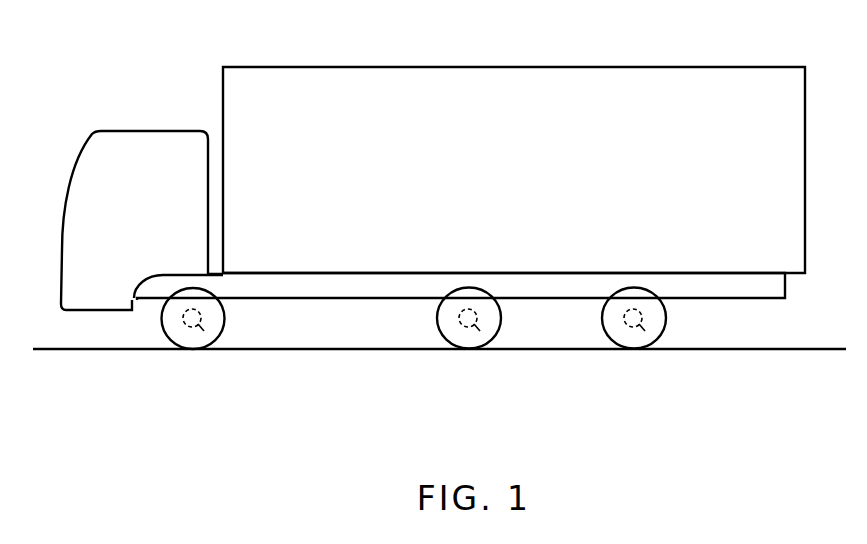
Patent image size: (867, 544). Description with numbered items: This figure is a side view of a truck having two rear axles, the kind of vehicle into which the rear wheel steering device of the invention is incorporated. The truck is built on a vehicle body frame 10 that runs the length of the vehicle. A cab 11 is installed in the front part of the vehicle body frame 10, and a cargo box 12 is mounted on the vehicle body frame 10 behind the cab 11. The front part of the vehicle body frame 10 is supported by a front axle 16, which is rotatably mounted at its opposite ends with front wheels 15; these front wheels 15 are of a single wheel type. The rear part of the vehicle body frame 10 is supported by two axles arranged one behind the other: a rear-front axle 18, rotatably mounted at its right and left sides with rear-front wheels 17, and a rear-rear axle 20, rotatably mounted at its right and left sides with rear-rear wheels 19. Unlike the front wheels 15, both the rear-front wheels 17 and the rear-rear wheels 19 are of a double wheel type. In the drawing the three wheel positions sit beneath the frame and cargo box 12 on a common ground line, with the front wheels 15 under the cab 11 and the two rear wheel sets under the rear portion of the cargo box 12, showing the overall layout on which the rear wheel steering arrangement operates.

The vehicle body frame 10 is at (292, 292).
The cab 11 is at (123, 135).
The cargo box 12 is at (582, 87).
The front wheels 15 is at (165, 338).
The front axle 16 is at (206, 336).
The rear-front wheels 17 is at (445, 337).
The rear-front axle 18 is at (482, 336).
The rear-rear wheels 19 is at (612, 337).
The rear-rear axle 20 is at (647, 336).